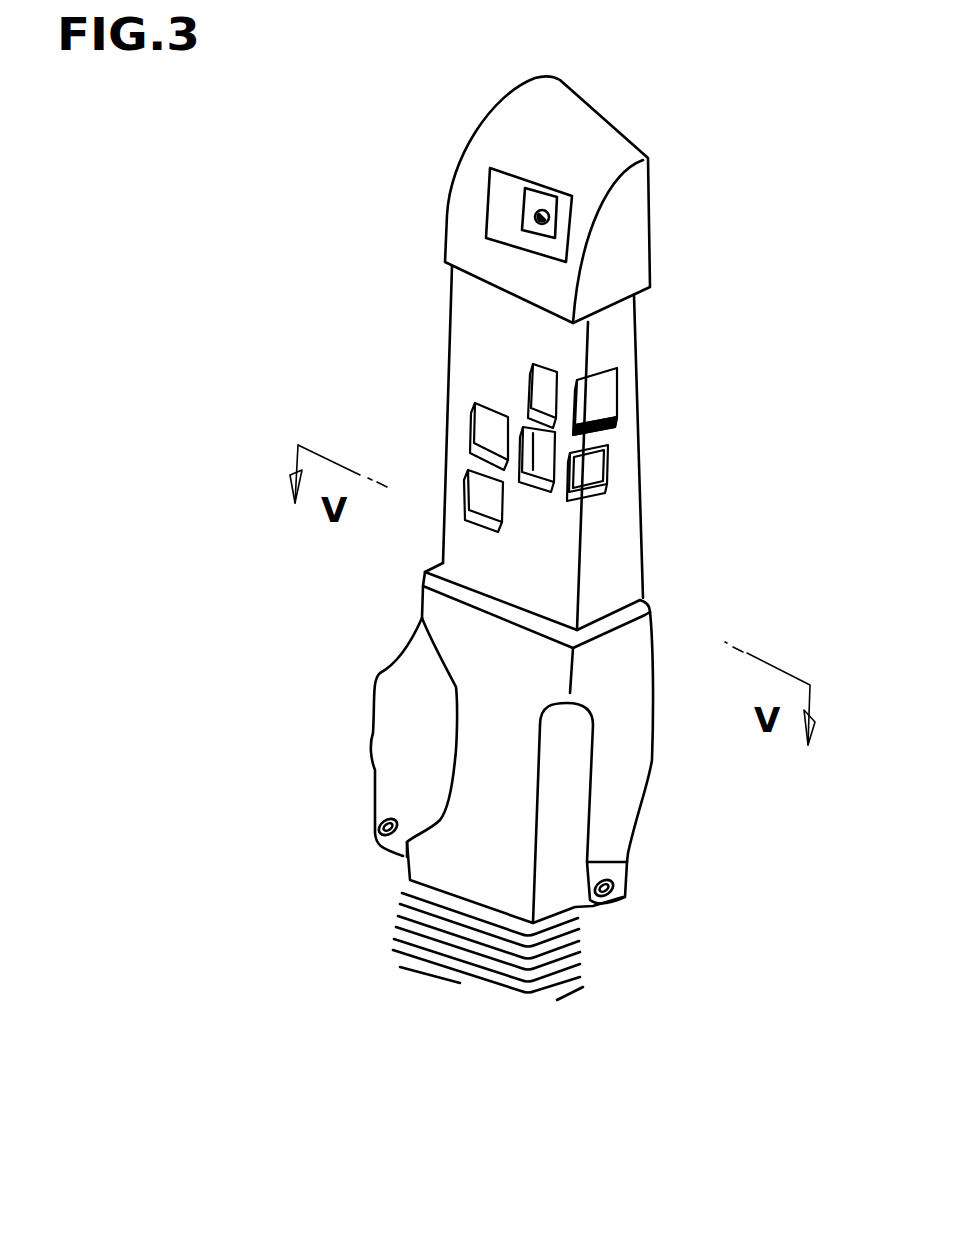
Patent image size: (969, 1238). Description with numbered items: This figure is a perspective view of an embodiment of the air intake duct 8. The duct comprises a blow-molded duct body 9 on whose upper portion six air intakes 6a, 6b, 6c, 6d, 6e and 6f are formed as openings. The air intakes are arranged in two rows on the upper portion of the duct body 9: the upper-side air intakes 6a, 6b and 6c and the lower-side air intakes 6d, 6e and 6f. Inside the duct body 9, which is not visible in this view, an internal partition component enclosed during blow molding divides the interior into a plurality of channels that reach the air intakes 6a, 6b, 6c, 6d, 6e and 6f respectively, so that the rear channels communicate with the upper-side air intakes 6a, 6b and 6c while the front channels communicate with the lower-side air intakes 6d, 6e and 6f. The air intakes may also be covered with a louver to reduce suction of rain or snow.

The air intake duct 8 is at (678, 303).
The duct body 9 is at (472, 295).
The air intake 6a is at (484, 420).
The air intake 6b is at (543, 375).
The air intake 6c is at (606, 380).
The air intake 6d is at (478, 508).
The air intake 6e is at (548, 493).
The air intake 6f is at (590, 489).